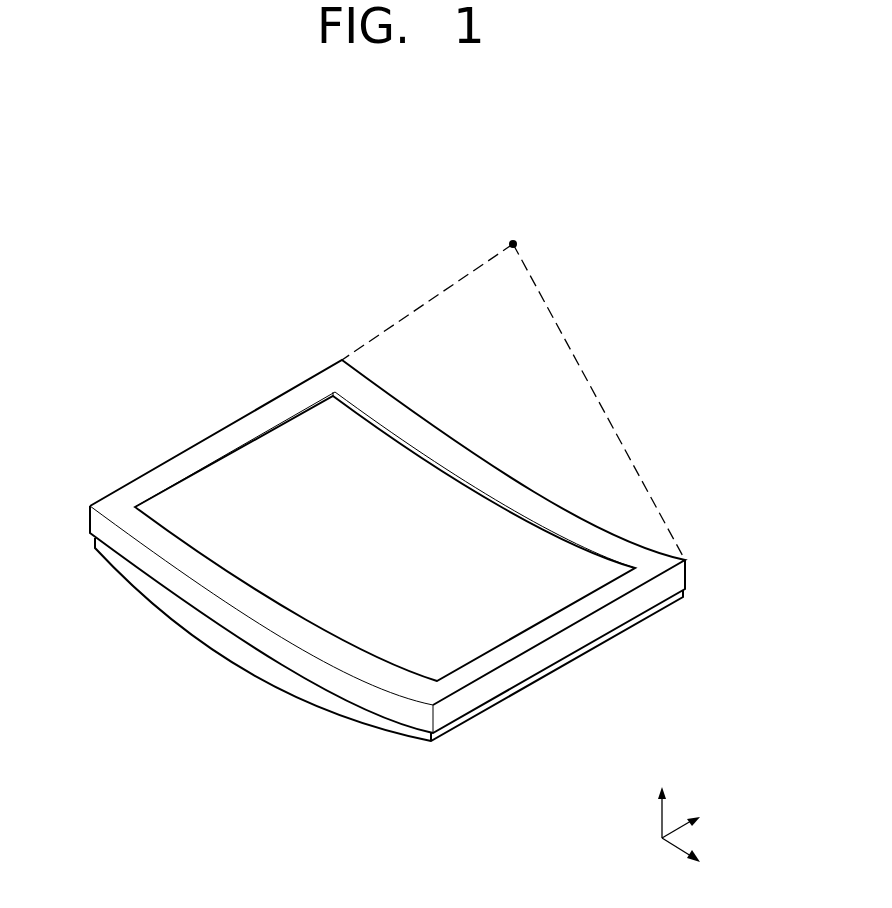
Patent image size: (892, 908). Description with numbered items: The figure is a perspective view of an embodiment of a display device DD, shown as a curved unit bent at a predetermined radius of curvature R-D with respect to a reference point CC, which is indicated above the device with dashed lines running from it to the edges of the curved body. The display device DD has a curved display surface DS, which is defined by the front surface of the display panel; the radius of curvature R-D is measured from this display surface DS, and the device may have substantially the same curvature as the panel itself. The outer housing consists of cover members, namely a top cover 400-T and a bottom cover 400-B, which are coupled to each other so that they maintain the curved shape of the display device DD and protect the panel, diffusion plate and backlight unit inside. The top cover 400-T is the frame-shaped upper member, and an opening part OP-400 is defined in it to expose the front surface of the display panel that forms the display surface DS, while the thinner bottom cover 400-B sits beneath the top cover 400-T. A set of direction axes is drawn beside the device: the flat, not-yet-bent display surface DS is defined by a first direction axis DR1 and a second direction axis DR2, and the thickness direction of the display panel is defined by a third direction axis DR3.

The display device DD is at (449, 506).
The reference point CC is at (517, 244).
The radius of curvature R-D is at (598, 400).
The display surface DS is at (455, 510).
The opening part OP-400 is at (603, 556).
The top cover 400-T is at (688, 571).
The bottom cover 400-B is at (683, 594).
The first direction axis DR1 is at (701, 862).
The second direction axis DR2 is at (701, 814).
The third direction axis DR3 is at (661, 797).